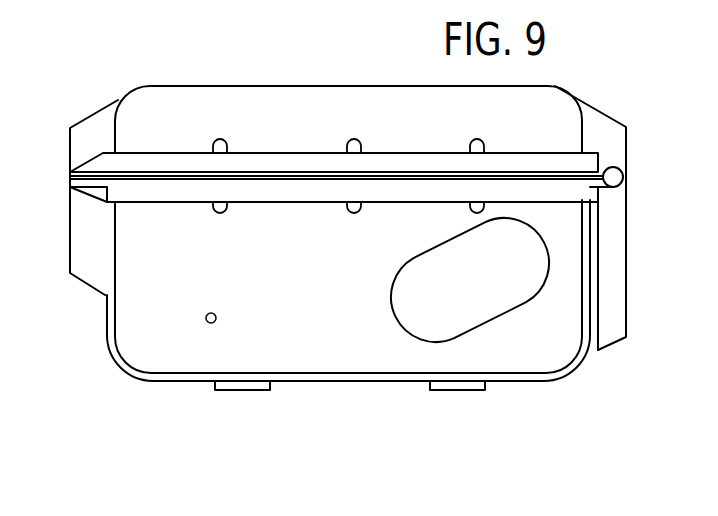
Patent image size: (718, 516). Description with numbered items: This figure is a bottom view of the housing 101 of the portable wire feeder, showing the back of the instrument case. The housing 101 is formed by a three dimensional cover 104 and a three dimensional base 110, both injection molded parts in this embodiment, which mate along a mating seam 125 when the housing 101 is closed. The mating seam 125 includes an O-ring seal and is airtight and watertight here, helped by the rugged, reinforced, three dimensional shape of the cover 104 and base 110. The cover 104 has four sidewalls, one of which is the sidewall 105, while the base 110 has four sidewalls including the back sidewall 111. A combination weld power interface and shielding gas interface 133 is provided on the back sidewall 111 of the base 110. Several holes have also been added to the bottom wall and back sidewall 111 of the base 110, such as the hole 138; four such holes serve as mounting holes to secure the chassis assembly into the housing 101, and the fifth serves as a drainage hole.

The housing 101 is at (614, 98).
The cover 104 is at (228, 85).
The sidewall 105 is at (132, 107).
The base 110 is at (170, 382).
The back sidewall 111 is at (136, 345).
The mating seam 125 is at (355, 178).
The combination weld power interface and shielding gas interface 133 is at (525, 272).
The hole 138 is at (211, 323).